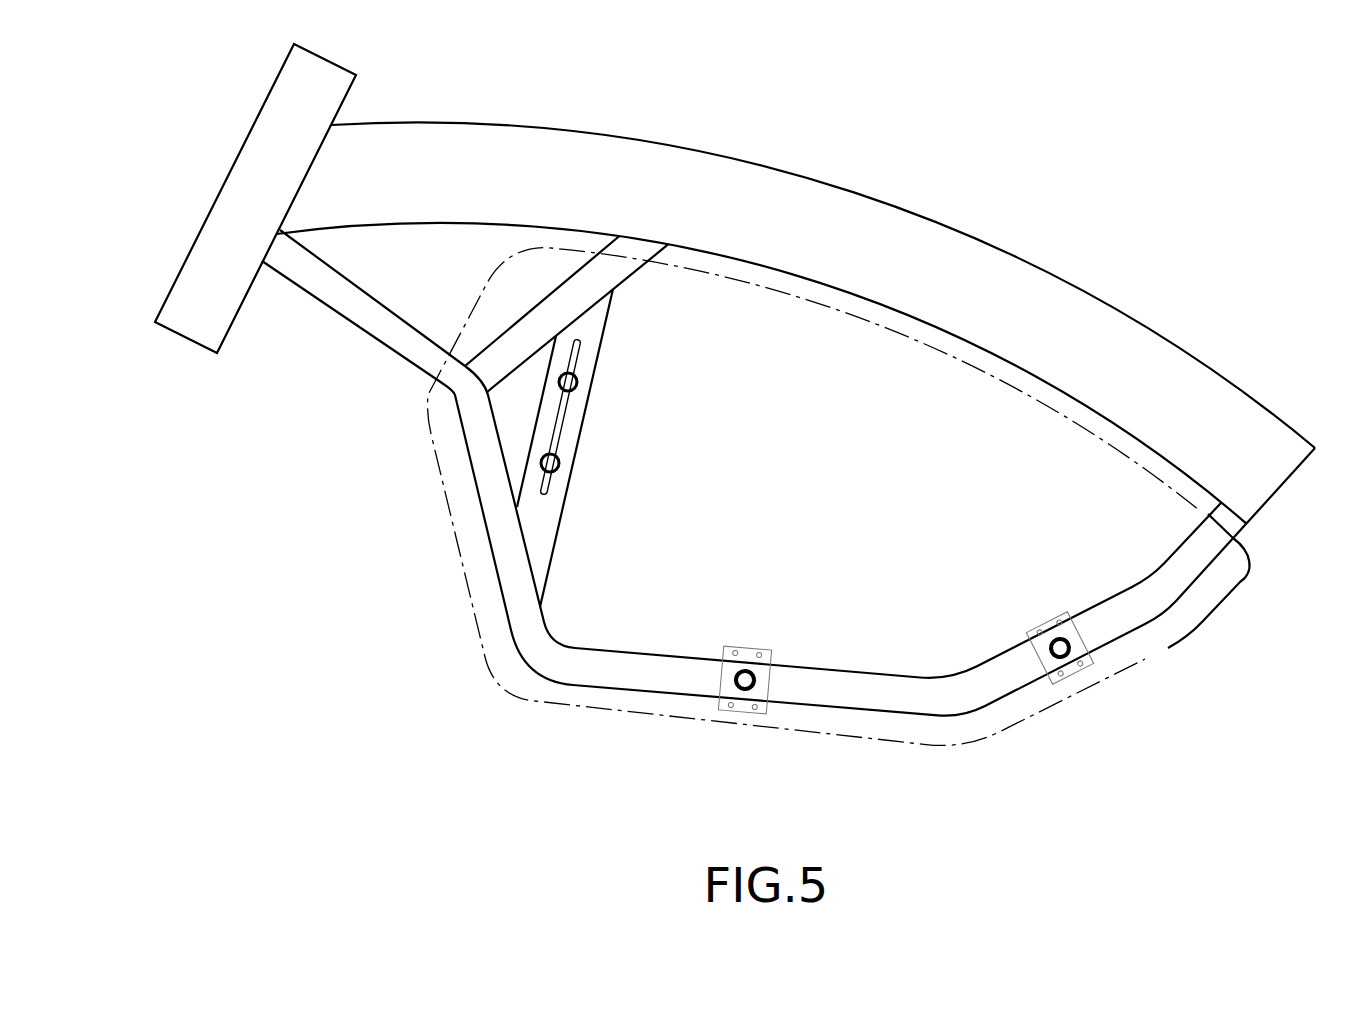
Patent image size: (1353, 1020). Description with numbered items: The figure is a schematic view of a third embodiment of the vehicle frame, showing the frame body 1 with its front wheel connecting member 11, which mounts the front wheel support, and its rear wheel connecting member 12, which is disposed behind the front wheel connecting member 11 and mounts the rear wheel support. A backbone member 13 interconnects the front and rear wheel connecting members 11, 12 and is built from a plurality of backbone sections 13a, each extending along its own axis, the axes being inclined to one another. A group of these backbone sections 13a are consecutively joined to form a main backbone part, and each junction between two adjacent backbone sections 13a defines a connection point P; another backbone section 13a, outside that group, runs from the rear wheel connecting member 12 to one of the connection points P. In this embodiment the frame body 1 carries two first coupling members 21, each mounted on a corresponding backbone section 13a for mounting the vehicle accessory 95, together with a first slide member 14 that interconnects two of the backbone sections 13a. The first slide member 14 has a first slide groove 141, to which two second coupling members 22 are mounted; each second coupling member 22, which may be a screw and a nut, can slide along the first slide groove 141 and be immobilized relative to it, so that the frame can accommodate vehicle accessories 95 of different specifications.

The frame body 1 is at (926, 192).
The front wheel connecting member 11 is at (248, 180).
The rear wheel connecting member 12 is at (1160, 368).
The backbone member 13 is at (768, 448).
The backbone section 13a is at (583, 287).
The first slide member 14 is at (520, 448).
The first slide groove 141 is at (563, 425).
The first coupling member 21 is at (742, 713).
The second coupling member 22 is at (578, 382).
The vehicle accessory 95 is at (467, 587).
The connection point P is at (458, 388).